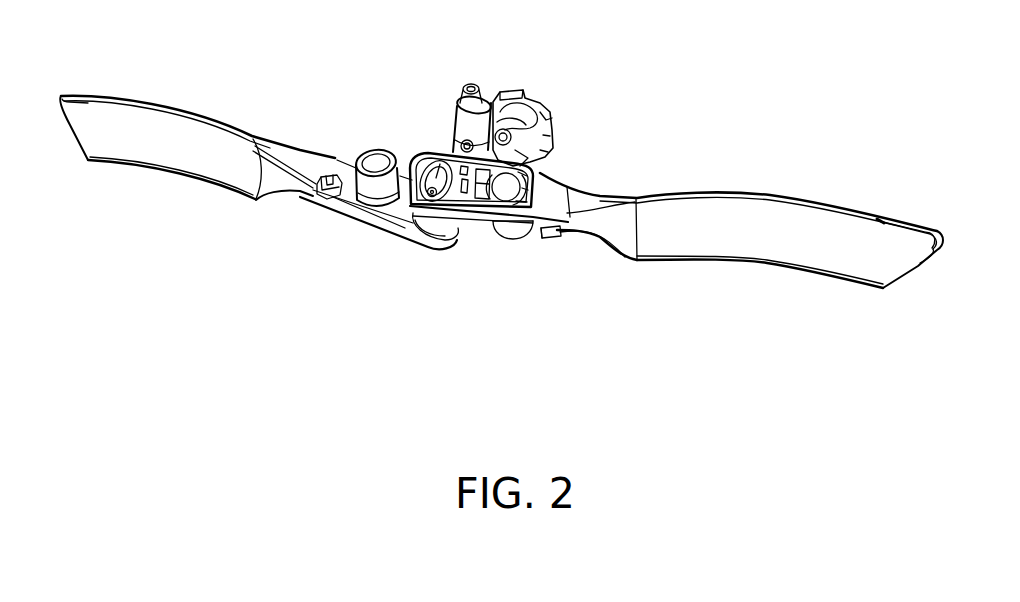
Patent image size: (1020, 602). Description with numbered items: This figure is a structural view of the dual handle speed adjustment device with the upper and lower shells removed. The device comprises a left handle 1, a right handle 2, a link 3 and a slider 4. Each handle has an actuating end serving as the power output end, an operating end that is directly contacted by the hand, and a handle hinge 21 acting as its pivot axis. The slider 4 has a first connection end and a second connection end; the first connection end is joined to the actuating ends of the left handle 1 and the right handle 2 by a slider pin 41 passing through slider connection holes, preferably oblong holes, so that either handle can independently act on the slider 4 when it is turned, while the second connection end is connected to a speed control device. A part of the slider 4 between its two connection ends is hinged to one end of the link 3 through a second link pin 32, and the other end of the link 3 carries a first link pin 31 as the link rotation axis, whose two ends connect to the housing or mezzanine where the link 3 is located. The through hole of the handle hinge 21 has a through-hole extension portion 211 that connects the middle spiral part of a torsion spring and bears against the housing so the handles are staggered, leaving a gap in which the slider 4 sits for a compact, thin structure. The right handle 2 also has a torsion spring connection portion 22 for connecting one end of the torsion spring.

The left handle 1 is at (178, 127).
The right handle 2 is at (704, 222).
The handle hinge 21 is at (513, 185).
The through-hole extension portion 211 is at (508, 228).
The torsion spring connection portion 22 is at (553, 230).
The link 3 is at (427, 76).
The first link pin 31 is at (470, 88).
The second link pin 32 is at (462, 143).
The slider 4 is at (517, 118).
The slider pin 41 is at (433, 214).